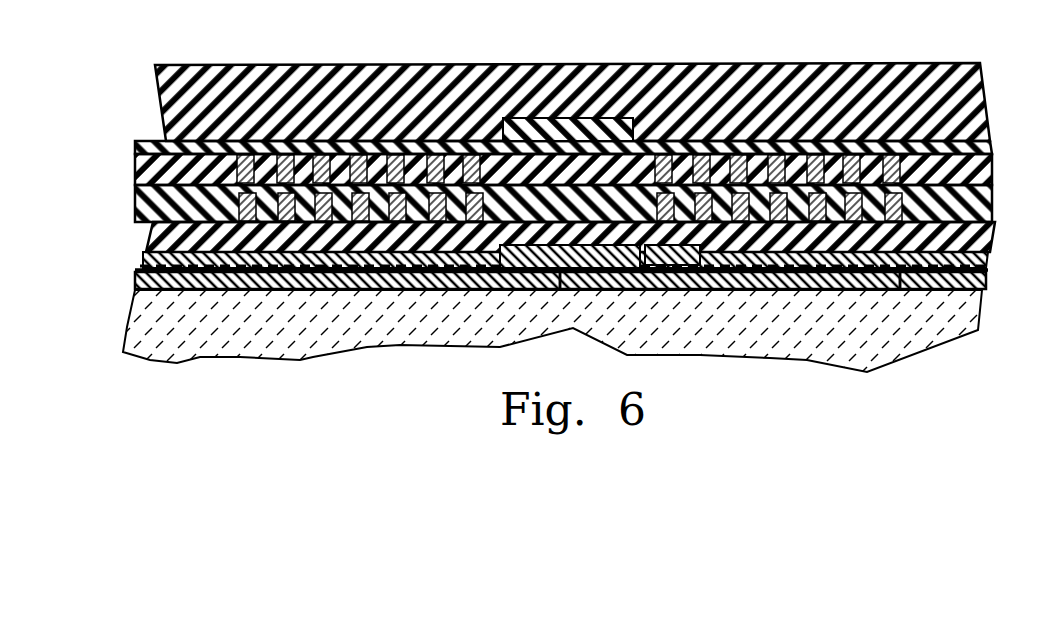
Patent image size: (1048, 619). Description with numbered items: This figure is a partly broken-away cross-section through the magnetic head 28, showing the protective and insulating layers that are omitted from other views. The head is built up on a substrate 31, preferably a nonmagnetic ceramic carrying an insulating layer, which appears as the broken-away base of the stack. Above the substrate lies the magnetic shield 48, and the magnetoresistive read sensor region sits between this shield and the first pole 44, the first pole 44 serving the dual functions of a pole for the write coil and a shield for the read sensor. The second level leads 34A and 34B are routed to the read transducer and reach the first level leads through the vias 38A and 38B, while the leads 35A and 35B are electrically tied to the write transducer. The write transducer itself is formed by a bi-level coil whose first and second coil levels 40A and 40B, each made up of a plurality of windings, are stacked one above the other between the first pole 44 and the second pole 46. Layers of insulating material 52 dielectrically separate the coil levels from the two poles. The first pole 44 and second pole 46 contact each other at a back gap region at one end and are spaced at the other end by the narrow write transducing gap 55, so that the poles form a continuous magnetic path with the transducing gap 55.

The magnetic head 28 is at (812, 50).
The substrate 31 is at (949, 321).
The lead 34A is at (143, 262).
The lead 34B is at (985, 257).
The lead 35A is at (270, 277).
The lead 35B is at (893, 287).
The via 38A is at (320, 275).
The via 38B is at (772, 260).
The first coil level 40A is at (152, 224).
The second coil level 40B is at (176, 138).
The first pole 44 is at (480, 268).
The second pole 46 is at (582, 125).
The magnetic shield 48 is at (987, 280).
The insulating material 52 is at (135, 218).
The write transducing gap 55 is at (132, 270).